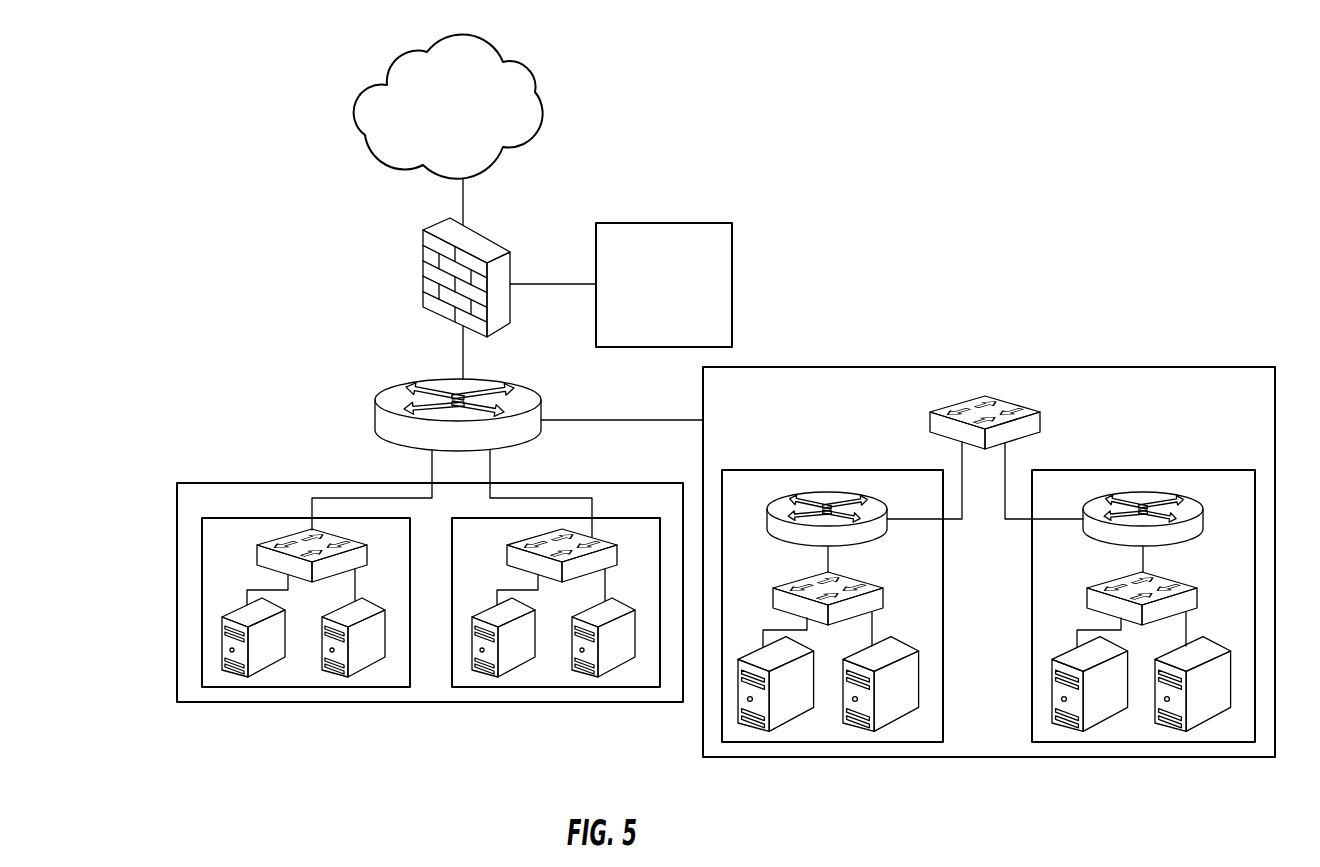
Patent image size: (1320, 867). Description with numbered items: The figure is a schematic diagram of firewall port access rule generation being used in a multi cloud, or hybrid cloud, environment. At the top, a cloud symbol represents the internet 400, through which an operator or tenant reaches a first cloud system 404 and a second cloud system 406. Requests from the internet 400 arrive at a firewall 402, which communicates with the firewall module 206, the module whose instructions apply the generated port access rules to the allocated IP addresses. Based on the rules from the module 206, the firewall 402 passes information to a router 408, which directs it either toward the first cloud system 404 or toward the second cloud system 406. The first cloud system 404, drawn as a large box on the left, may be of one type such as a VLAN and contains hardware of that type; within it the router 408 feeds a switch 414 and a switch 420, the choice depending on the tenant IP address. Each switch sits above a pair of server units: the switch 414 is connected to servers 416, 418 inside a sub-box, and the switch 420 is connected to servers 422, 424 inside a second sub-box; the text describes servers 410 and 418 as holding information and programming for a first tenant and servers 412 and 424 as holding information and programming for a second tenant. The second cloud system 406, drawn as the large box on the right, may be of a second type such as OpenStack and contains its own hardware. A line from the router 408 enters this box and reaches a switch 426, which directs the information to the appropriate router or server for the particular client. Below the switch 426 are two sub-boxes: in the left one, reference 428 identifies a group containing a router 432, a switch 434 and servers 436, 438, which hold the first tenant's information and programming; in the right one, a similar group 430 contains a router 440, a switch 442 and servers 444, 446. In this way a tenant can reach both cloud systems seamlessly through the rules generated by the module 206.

The internet 400 is at (548, 66).
The firewall 402 is at (422, 277).
The firewall module 206 is at (664, 285).
The router 408 is at (373, 420).
The first cloud system 404 is at (177, 582).
The second cloud system 406 is at (993, 367).
The server 410 is at (243, 688).
The server 412 is at (505, 702).
The switch 414 is at (290, 535).
The server 416 is at (265, 667).
The server 418 is at (358, 672).
The switch 420 is at (603, 537).
The server 422 is at (470, 648).
The server 424 is at (615, 668).
The switch 426 is at (1022, 402).
The first tenant servers group 428 is at (830, 742).
The fourth sub-network 430 is at (1135, 747).
The router 432 is at (835, 492).
The switch 434 is at (872, 580).
The server 436 is at (750, 730).
The server 438 is at (900, 725).
The router 440 is at (1158, 492).
The switch 442 is at (1170, 575).
The server 444 is at (1095, 725).
The server 446 is at (1205, 727).